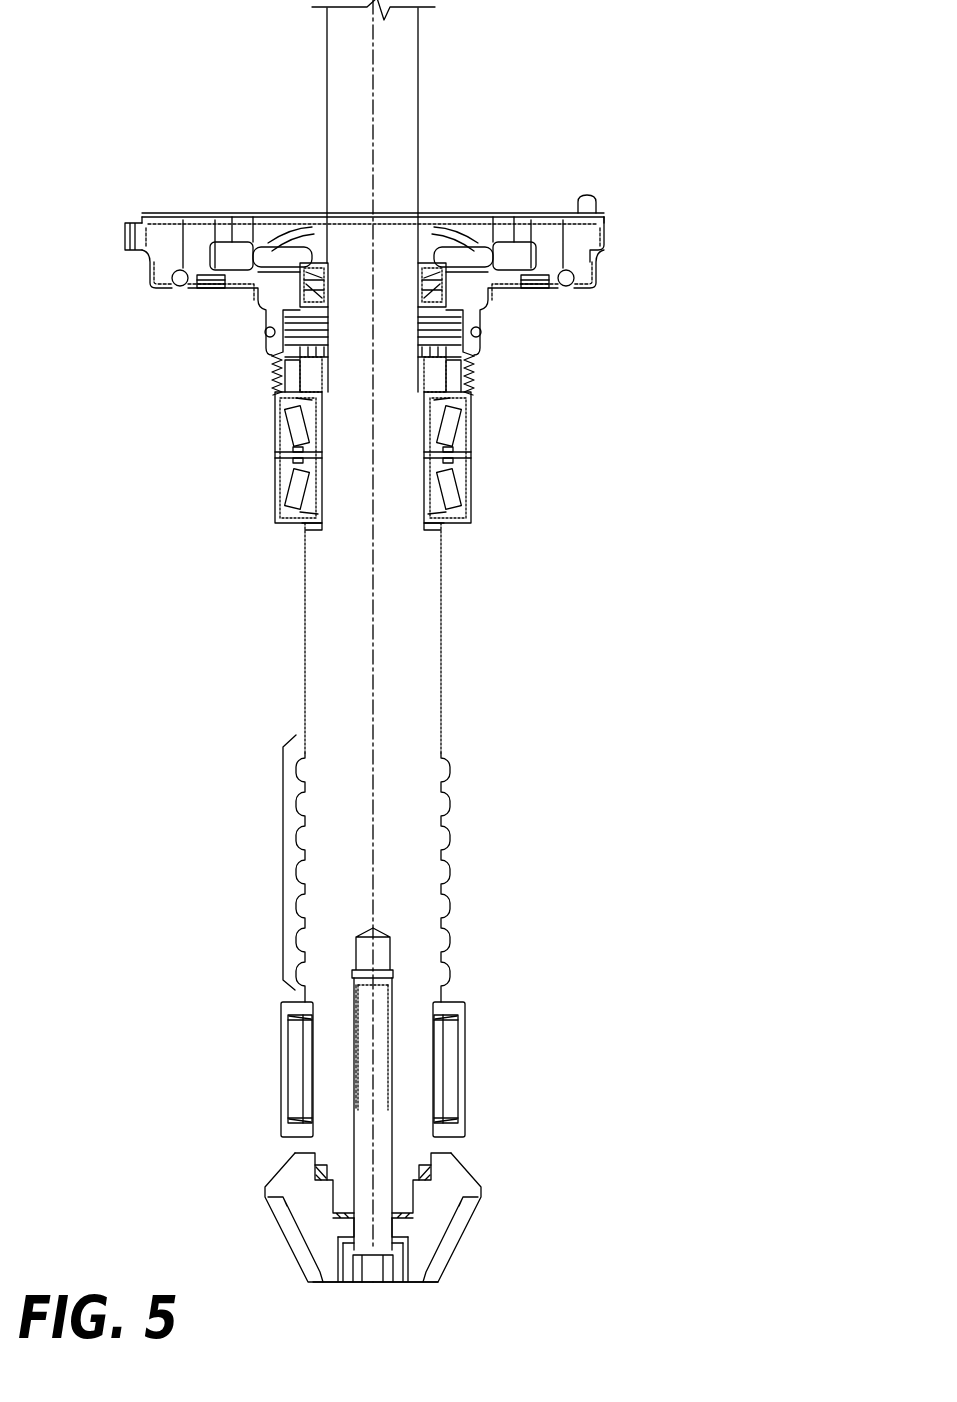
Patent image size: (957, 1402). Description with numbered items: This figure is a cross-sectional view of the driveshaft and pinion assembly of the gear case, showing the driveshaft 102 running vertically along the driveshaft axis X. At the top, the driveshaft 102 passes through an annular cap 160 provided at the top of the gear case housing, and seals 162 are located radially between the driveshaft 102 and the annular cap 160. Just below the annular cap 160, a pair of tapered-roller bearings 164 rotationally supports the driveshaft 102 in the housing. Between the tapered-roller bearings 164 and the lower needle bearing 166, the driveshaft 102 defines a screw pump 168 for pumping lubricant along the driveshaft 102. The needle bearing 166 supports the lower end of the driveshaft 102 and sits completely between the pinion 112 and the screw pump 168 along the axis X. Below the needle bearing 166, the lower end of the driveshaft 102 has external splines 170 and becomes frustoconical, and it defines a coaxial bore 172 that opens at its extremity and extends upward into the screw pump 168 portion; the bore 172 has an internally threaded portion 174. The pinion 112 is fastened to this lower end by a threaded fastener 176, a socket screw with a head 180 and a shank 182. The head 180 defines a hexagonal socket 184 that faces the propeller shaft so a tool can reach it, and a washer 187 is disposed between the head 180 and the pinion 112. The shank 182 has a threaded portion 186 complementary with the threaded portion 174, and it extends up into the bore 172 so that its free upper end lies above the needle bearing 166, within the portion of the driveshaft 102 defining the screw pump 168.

The driveshaft 102 is at (417, 596).
The pinion 112 is at (452, 1198).
The annular cap 160 is at (540, 224).
The seals 162 is at (445, 290).
The tapered-roller bearings 164 is at (463, 483).
The needle bearing 166 is at (449, 1067).
The screw pump 168 is at (283, 882).
The external splines 170 is at (433, 1180).
The bore 172 is at (386, 953).
The internally threaded portion 174 is at (393, 1037).
The threaded fastener 176 is at (371, 1136).
The head 180 is at (398, 1263).
The shank 182 is at (357, 1158).
The socket 184 is at (366, 1280).
The threaded portion 186 is at (347, 1079).
The washer 187 is at (400, 1230).
The driveshaft axis X is at (376, 681).